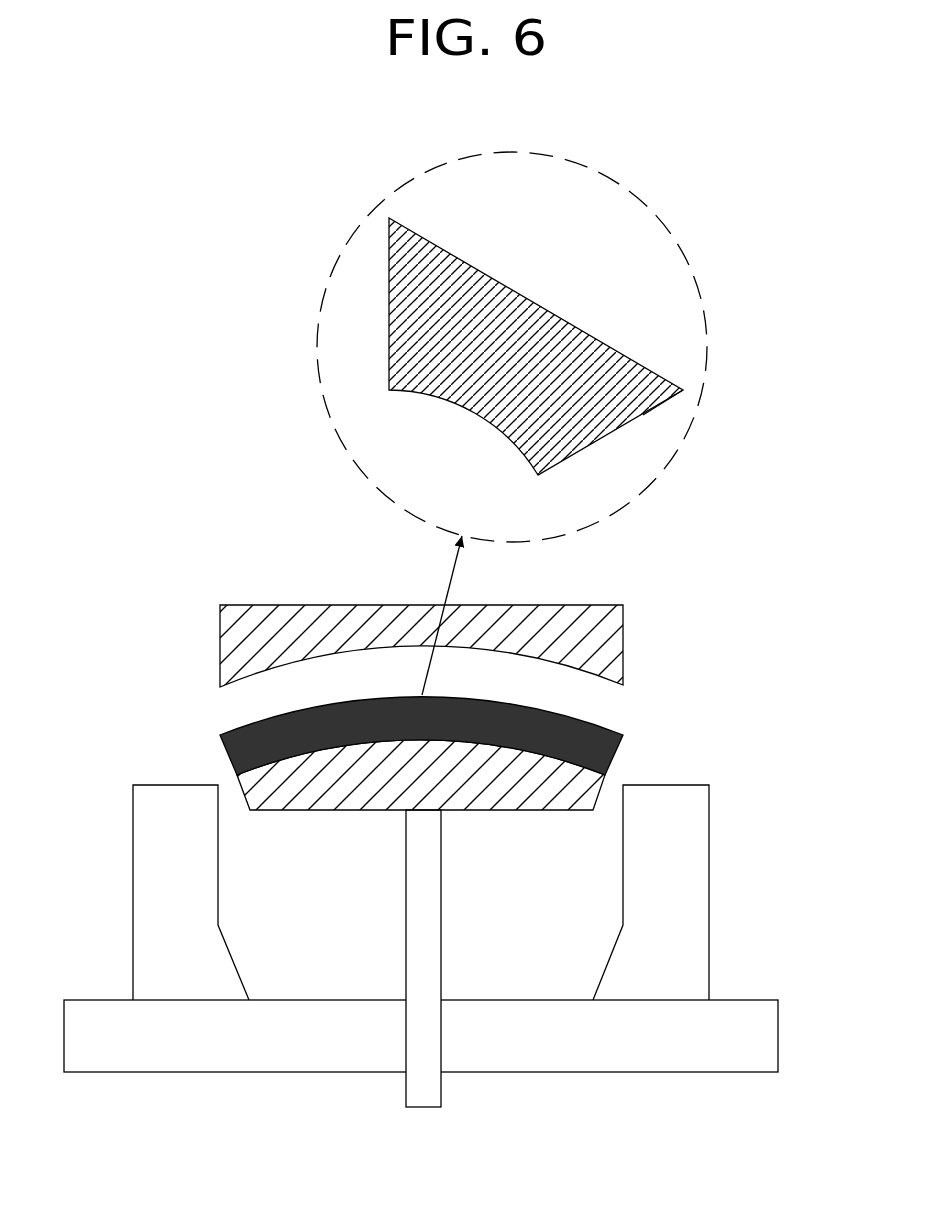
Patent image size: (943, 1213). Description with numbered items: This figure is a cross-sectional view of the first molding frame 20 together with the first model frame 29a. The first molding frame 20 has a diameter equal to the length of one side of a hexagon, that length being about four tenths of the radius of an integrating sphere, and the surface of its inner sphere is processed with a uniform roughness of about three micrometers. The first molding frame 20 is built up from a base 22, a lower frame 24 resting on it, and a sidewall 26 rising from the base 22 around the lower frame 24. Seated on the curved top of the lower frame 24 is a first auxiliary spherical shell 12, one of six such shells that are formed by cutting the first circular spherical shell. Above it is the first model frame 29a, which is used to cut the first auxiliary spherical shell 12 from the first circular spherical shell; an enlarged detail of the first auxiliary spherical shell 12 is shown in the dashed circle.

The first auxiliary spherical shell 12 is at (596, 724).
The first molding frame 20 is at (423, 956).
The base 22 is at (679, 1063).
The lower frame 24 is at (518, 800).
The sidewall 26 is at (698, 910).
The first model frame 29a is at (612, 643).